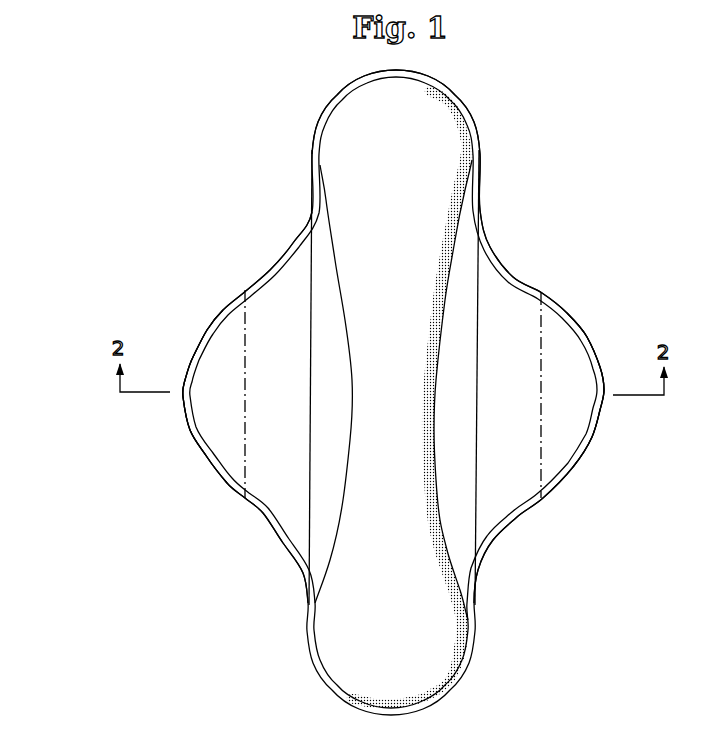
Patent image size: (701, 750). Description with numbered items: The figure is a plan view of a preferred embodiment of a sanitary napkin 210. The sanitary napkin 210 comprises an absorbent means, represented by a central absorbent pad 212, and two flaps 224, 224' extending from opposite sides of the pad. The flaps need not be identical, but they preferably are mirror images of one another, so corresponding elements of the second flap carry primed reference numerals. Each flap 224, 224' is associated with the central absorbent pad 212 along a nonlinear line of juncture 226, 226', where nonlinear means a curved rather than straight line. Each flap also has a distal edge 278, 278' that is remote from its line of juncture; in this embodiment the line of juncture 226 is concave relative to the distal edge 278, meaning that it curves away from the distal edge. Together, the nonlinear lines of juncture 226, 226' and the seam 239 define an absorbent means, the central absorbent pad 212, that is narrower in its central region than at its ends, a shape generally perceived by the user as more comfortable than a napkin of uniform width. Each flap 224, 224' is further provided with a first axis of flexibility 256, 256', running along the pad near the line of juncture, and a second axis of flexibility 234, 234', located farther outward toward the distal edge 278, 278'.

The sanitary napkin 210 is at (278, 143).
The central absorbent pad 212 is at (482, 148).
The seam 239 is at (440, 91).
The flap 224 is at (247, 407).
The flap 224' is at (539, 406).
The nonlinear line of juncture 226 is at (291, 384).
The nonlinear line of juncture 226' is at (448, 397).
The second axis of flexibility 234 is at (193, 394).
The second axis of flexibility 234' is at (601, 395).
The first axis of flexibility 256 is at (276, 377).
The first axis of flexibility 256' is at (528, 377).
The distal edge 278 is at (165, 396).
The distal edge 278' is at (609, 383).